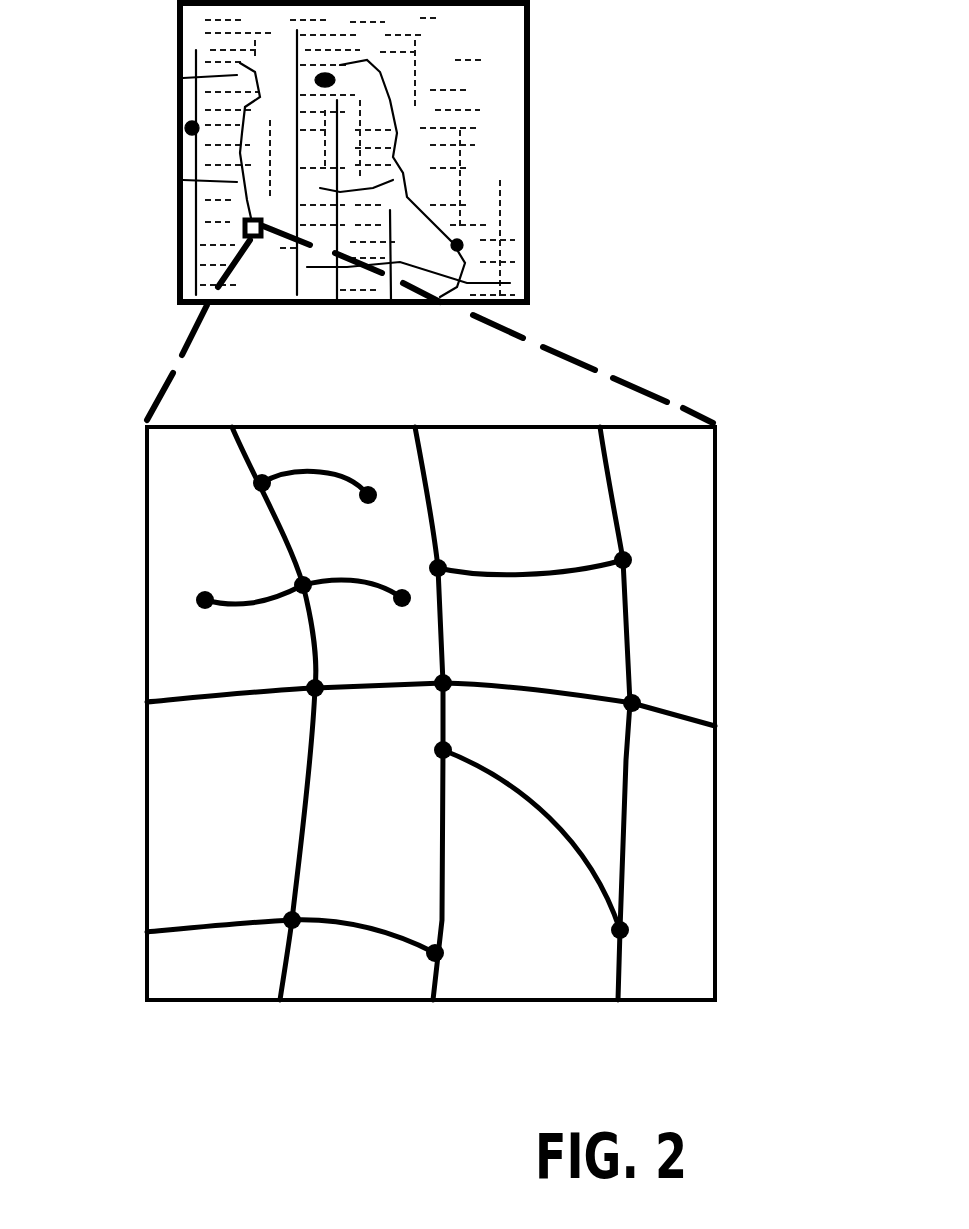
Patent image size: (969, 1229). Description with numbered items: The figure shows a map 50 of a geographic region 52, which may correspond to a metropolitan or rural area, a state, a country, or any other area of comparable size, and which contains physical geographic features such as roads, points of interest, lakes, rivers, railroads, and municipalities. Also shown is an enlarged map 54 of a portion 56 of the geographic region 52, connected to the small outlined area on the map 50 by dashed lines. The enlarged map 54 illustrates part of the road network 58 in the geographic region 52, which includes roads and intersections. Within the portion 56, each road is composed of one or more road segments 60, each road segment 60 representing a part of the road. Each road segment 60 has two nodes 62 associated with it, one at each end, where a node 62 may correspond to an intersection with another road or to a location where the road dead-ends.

The map 50 is at (160, 178).
The geographic region 52 is at (478, 47).
The enlarged map 54 is at (730, 487).
The portion 56 is at (508, 977).
The road network 58 is at (234, 722).
The road segment 60 is at (240, 618).
The node 62 is at (202, 565).